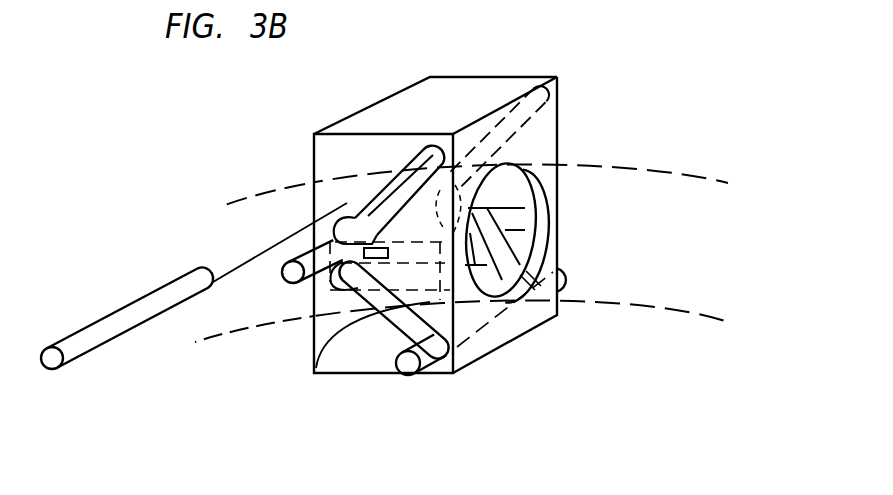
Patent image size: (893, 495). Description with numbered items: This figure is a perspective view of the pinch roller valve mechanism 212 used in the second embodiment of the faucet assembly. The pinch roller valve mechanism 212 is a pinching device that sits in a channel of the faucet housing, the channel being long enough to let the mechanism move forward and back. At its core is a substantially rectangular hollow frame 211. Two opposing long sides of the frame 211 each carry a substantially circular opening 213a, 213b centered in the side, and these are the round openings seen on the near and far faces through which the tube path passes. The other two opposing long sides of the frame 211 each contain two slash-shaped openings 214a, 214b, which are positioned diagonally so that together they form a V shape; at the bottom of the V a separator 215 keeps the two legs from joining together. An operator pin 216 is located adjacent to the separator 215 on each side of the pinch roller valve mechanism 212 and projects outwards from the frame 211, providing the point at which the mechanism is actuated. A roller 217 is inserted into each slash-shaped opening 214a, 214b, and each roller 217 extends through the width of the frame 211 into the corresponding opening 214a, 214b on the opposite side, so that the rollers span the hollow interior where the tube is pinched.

The hollow frame 211 is at (367, 374).
The pinch roller valve mechanism 212 is at (572, 99).
The circular opening 213a is at (548, 212).
The circular opening 213b is at (353, 160).
The slash-shaped opening 214a is at (385, 190).
The slash-shaped opening 214b is at (314, 350).
The separator 215 is at (348, 287).
The operator pin 216 is at (270, 281).
The roller 217 is at (122, 323).